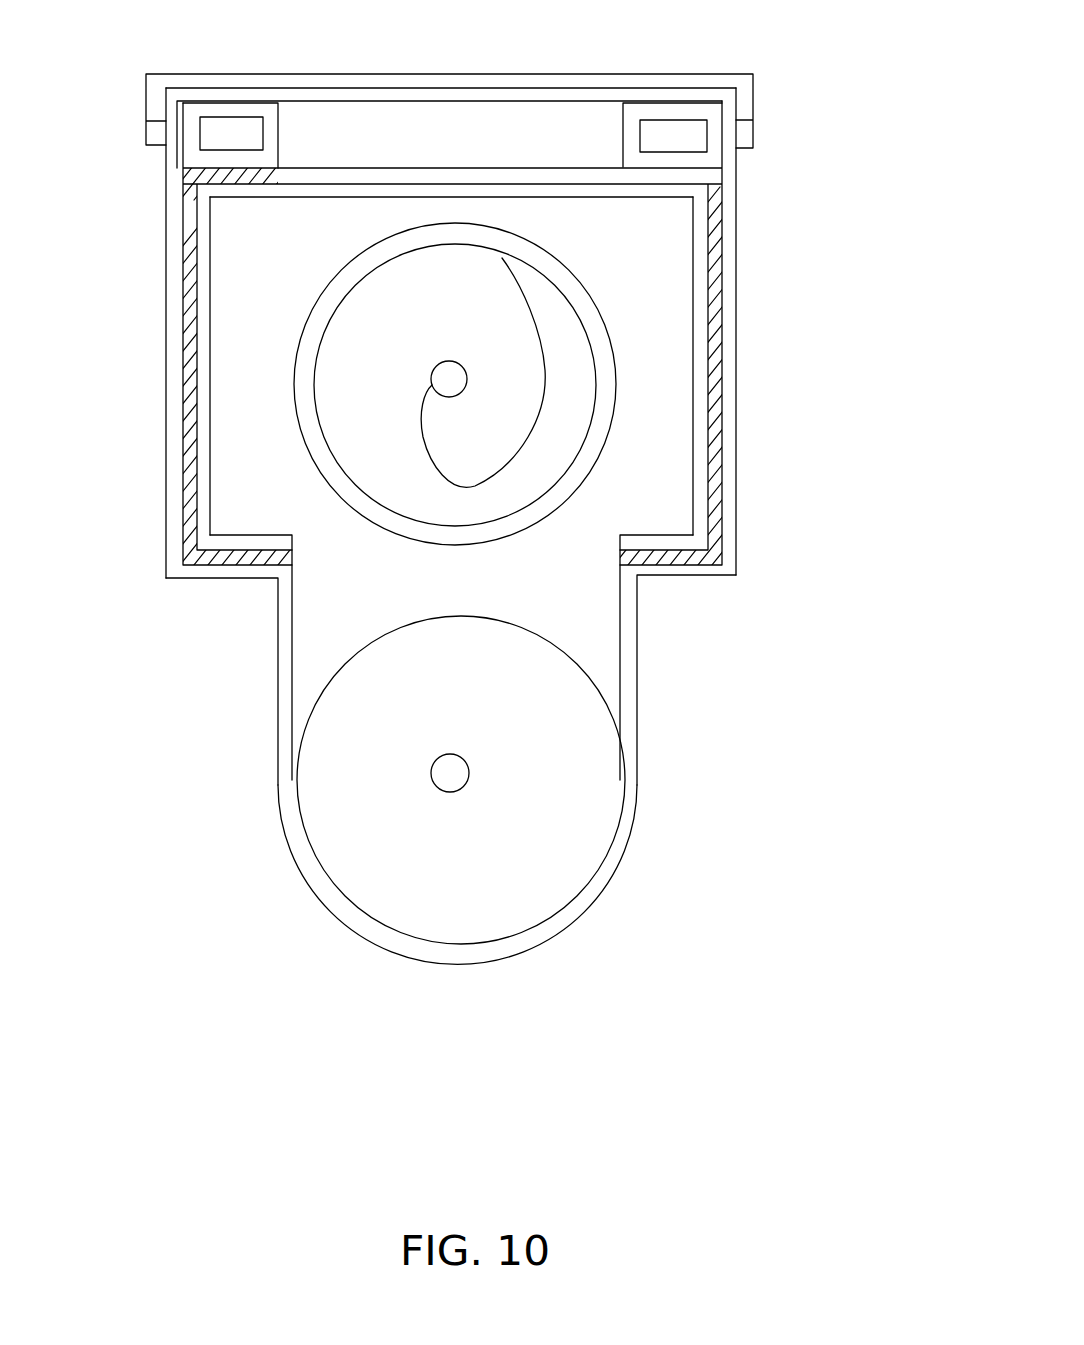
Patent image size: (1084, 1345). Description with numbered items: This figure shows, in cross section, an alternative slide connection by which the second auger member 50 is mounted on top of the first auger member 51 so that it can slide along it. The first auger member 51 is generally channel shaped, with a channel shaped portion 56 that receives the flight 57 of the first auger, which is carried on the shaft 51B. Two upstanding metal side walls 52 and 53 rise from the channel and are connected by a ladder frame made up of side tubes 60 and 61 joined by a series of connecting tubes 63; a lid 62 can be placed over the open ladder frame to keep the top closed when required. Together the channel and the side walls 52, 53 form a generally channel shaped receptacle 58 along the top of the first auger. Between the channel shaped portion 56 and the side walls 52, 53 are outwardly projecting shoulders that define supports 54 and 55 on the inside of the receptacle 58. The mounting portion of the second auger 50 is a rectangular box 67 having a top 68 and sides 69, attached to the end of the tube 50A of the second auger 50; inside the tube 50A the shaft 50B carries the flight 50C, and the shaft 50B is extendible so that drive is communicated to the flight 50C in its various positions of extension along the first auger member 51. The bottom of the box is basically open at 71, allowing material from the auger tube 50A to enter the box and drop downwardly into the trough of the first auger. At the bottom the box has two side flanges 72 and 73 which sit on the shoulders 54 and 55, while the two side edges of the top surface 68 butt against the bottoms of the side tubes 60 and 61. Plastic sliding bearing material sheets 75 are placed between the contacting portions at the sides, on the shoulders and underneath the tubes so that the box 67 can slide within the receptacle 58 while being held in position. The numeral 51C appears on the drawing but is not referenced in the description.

The second auger member 50 is at (650, 256).
The tube of the second auger 50A is at (602, 318).
The shaft of the second auger 50B is at (448, 383).
The flight of the second auger 50C is at (562, 422).
The first auger member 51 is at (666, 771).
The shaft of the first auger 51B is at (446, 782).
The second reel body 51C is at (545, 834).
The side wall 52 is at (738, 373).
The side wall 53 is at (175, 340).
The support 54 is at (210, 580).
The support 55 is at (710, 577).
The channel shaped portion 56 is at (622, 868).
The flight of the first auger 57 is at (465, 889).
The channel shaped receptacle 58 is at (737, 262).
The side tube 60 is at (193, 117).
The side tube 61 is at (634, 115).
The lid 62 is at (347, 87).
The connecting tube 63 is at (457, 133).
The rectangular box 67 is at (700, 413).
The top 68 is at (298, 198).
The side 69 is at (202, 322).
The open bottom 71 is at (391, 580).
The side flange 72 is at (283, 543).
The side flange 73 is at (635, 541).
The plastic sliding bearing material sheet 75 is at (696, 182).